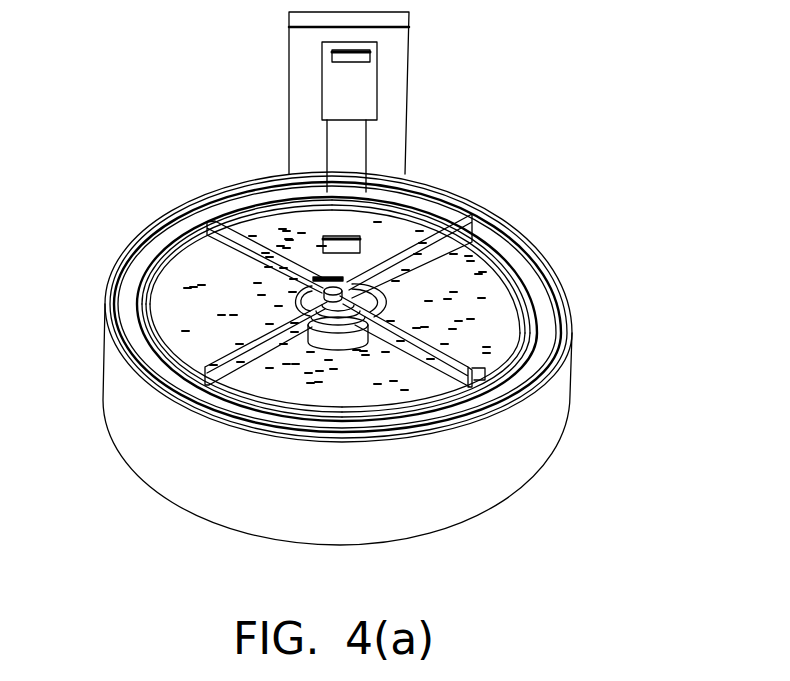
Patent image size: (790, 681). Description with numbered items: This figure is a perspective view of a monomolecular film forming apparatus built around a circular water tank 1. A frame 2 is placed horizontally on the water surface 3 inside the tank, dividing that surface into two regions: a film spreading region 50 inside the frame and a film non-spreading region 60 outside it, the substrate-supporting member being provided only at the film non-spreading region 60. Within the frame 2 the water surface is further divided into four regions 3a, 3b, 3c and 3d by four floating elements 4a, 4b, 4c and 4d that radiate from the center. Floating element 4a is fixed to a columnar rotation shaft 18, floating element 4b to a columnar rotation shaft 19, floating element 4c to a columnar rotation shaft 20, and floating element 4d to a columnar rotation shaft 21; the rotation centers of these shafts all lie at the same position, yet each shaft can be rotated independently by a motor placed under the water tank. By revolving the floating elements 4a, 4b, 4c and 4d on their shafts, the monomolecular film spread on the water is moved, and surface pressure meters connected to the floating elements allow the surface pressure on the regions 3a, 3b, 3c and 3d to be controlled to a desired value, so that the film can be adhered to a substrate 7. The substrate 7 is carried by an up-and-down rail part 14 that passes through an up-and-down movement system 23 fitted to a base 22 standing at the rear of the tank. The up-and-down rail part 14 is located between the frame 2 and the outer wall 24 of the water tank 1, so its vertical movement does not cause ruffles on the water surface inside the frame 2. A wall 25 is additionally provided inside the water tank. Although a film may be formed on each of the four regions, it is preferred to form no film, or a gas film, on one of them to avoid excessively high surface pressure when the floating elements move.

The water tank 1 is at (569, 402).
The frame 2 is at (540, 290).
The water surface 3 is at (547, 317).
The water surface region 3a is at (447, 195).
The water surface region 3b is at (480, 263).
The water surface region 3c is at (423, 392).
The water surface region 3d is at (165, 303).
The floating element 4a is at (490, 203).
The floating element 4b is at (567, 458).
The floating element 4c is at (229, 370).
The floating element 4d is at (198, 205).
The substrate 7 is at (355, 237).
The up-and-down rail part 14 is at (333, 150).
The columnar rotation shaft 18 is at (322, 280).
The columnar rotation shaft 19 is at (331, 310).
The columnar rotation shaft 20 is at (342, 343).
The columnar rotation shaft 21 is at (296, 293).
The base 22 is at (405, 60).
The up-and-down movement system 23 is at (328, 100).
The outer wall 24 is at (557, 352).
The wall 25 is at (293, 307).
The film spreading region 50 is at (378, 388).
The film non-spreading region 60 is at (142, 260).